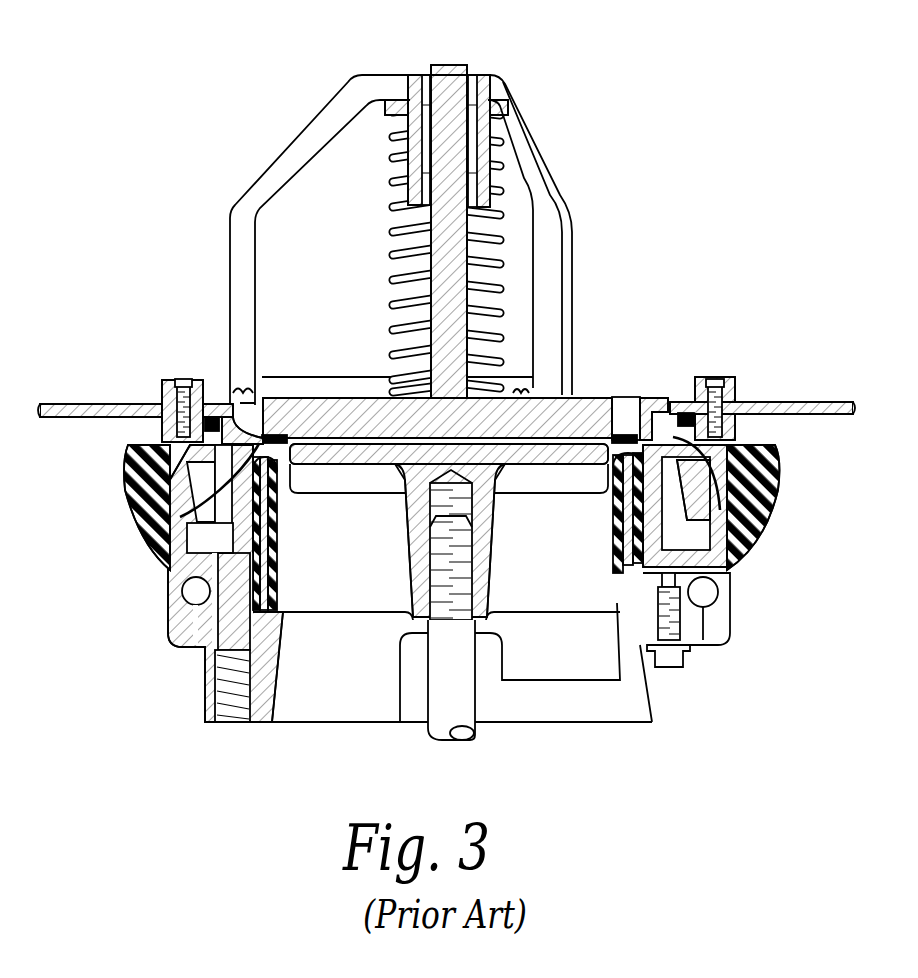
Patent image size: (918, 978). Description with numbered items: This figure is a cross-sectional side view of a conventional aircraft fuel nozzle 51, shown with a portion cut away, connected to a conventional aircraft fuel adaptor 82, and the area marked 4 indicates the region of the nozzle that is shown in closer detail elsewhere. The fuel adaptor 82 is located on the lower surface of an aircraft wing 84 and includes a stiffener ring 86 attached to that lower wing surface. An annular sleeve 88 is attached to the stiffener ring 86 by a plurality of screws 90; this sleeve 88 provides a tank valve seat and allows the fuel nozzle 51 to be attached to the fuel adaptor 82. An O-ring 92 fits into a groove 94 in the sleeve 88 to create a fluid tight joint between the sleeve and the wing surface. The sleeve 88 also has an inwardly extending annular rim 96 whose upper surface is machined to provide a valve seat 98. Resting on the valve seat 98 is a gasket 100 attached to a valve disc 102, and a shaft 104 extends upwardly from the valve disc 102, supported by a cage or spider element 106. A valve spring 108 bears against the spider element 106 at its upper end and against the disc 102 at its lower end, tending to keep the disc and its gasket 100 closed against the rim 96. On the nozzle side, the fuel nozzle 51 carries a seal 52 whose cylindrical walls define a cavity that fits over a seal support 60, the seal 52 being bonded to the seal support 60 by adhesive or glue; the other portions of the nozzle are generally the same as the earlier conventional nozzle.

The aircraft fuel adaptor 82 is at (443, 379).
The spider element 106 is at (318, 115).
The valve spring 108 is at (503, 192).
The shaft 104 is at (450, 256).
The valve disc 102 is at (597, 412).
The gasket 100 is at (270, 437).
The O-ring 92 is at (212, 392).
The screws 90 is at (173, 383).
The annular sleeve 88 is at (140, 428).
The aircraft wing 84 is at (797, 402).
The stiffener ring 86 is at (713, 377).
The annular rim 96 is at (620, 430).
The valve seat 98 is at (638, 430).
The groove 94 is at (250, 502).
The seal 52 is at (237, 528).
The seal support 60 is at (177, 562).
The fuel nozzle 51 is at (443, 579).
The diaphragm chamber 4 is at (640, 432).